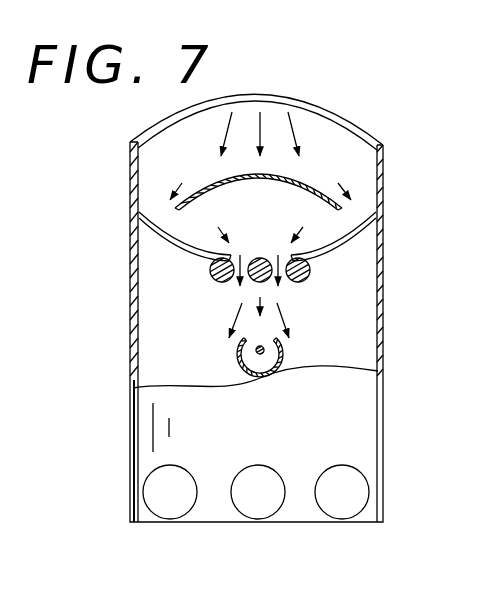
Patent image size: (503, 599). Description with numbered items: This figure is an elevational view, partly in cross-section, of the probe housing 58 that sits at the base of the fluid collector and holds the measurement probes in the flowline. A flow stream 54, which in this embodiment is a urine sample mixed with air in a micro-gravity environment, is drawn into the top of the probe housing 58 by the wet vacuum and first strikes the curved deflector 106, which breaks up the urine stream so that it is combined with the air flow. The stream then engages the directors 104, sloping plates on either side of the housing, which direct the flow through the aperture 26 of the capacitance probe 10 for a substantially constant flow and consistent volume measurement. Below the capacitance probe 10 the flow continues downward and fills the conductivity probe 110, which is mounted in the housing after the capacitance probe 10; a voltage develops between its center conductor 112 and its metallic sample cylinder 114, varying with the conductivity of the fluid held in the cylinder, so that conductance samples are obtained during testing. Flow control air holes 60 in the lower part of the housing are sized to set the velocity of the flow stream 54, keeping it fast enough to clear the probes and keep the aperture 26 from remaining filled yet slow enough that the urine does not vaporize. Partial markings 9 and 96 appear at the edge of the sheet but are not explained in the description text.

The capacitance probe 10 is at (201, 284).
The aperture 26 is at (243, 232).
The flow stream 54 is at (292, 120).
The probe housing 58 is at (108, 202).
The flow control air holes 60 is at (342, 492).
The director 104 is at (173, 238).
The deflector 106 is at (338, 180).
The conductivity probe 110 is at (294, 361).
The center conductor 112 is at (264, 347).
The metallic sample cylinder 114 is at (237, 358).
The section line 9 is at (487, 282).
The section line 96 is at (489, 390).